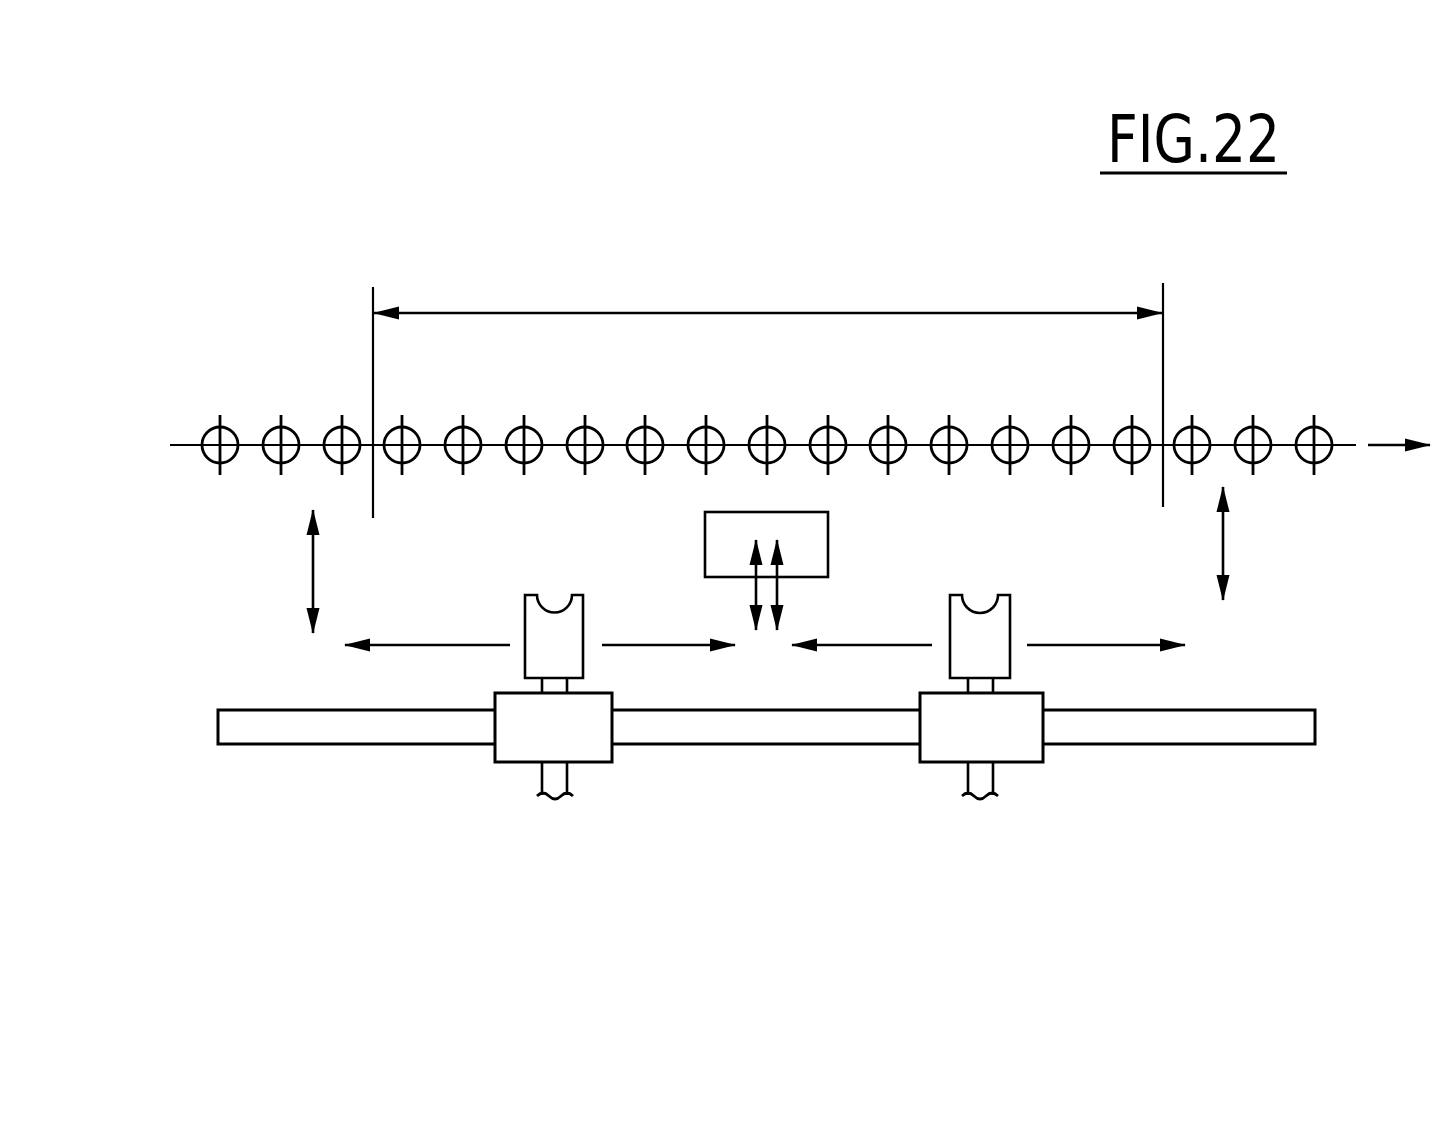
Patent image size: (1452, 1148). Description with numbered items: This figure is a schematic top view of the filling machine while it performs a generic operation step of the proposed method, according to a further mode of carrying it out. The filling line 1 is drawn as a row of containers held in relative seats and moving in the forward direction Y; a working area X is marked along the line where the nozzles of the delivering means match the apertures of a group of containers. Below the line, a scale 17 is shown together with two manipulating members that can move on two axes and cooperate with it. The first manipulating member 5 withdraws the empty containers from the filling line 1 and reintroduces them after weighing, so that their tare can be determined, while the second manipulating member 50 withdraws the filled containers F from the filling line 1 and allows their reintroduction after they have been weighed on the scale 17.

The filling line 1 is at (182, 438).
The first manipulating member 5 is at (493, 770).
The scale 17 is at (815, 535).
The second manipulating member 50 is at (1045, 775).
The filled container F is at (1258, 432).
The working area X is at (768, 391).
The forward direction Y is at (1399, 420).